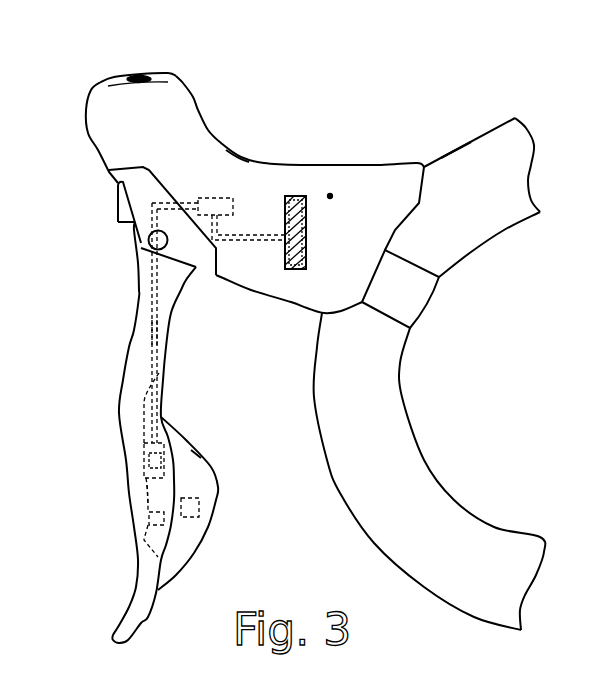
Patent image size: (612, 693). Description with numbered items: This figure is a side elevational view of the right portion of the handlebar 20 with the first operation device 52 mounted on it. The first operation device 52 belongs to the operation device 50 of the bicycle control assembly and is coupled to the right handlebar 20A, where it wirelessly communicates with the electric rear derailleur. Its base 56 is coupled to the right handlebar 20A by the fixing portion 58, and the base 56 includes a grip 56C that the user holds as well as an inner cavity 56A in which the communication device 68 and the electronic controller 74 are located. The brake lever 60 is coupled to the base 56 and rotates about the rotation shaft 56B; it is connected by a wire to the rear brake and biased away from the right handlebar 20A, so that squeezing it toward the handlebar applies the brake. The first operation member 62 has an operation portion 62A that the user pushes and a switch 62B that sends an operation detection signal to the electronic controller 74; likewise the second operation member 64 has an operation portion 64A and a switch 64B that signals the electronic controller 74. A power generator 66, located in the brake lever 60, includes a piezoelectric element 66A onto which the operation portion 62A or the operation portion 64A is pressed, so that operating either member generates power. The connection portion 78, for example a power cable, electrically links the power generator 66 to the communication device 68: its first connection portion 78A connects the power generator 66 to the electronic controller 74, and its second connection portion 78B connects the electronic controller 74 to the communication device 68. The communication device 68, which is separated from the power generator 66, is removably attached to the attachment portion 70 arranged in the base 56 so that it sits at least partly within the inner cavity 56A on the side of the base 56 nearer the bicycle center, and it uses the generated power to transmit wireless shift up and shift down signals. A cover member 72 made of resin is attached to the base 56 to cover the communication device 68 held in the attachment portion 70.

The handlebar 20 is at (489, 127).
The right handlebar 20A is at (456, 157).
The operation device 50 is at (75, 66).
The first operation device 52 is at (97, 152).
The base 56 is at (175, 98).
The inner cavity 56A is at (329, 194).
The rotation shaft 56B is at (143, 243).
The grip 56C is at (235, 175).
The fixing portion 58 is at (421, 298).
The brake lever 60 is at (133, 302).
The first operation member 62 is at (147, 417).
The operation portion 62A is at (153, 497).
The switch 62B is at (148, 518).
The second operation member 64 is at (217, 490).
The operation portion 64A is at (197, 470).
The switch 64B is at (199, 518).
The power generator 66 is at (143, 455).
The piezoelectric element 66A is at (148, 463).
The communication device 68 is at (293, 196).
The attachment portion 70 is at (283, 213).
The cover member 72 is at (306, 240).
The electronic controller 74 is at (213, 196).
The connection portion 78 is at (150, 360).
The first connection portion 78A is at (150, 334).
The second connection portion 78B is at (257, 243).